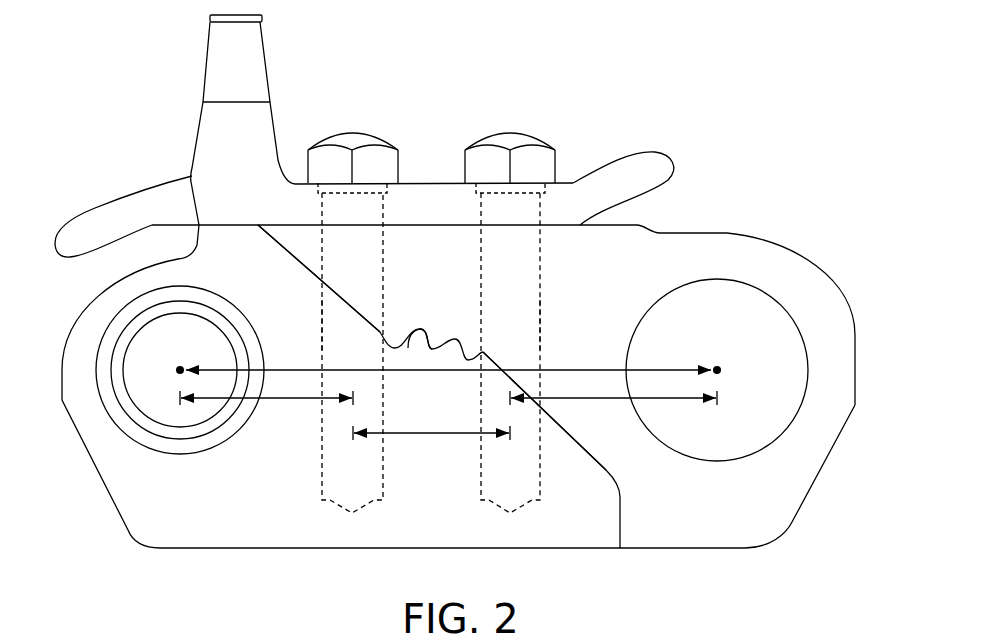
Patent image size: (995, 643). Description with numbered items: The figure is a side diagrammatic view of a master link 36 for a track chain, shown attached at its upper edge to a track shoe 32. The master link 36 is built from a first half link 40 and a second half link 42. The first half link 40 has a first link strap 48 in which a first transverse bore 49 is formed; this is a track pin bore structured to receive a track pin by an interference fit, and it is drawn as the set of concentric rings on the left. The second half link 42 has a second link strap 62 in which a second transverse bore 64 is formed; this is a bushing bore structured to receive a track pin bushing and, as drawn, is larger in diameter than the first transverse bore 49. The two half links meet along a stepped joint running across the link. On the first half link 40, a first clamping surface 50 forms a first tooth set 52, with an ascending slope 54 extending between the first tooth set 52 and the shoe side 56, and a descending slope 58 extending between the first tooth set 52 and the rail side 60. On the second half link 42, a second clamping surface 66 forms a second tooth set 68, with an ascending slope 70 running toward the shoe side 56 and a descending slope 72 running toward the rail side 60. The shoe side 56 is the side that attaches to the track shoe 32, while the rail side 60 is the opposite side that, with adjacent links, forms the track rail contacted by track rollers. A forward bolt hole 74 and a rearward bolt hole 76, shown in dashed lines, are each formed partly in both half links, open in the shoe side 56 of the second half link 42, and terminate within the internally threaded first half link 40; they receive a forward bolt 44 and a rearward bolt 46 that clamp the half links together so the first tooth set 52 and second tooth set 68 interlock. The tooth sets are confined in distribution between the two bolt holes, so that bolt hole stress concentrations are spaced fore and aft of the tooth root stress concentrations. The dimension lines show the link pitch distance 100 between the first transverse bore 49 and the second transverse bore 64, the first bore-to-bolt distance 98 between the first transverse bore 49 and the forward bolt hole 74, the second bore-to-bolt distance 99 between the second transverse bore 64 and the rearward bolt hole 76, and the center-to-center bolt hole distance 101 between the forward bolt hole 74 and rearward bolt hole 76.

The track shoe 32 is at (268, 112).
The master link 36 is at (770, 142).
The first half link 40 is at (93, 296).
The second half link 42 is at (855, 405).
The forward bolt 44 is at (388, 160).
The rearward bolt 46 is at (548, 160).
The first link strap 48 is at (92, 398).
The first transverse bore 49 is at (204, 418).
The first clamping surface 50 is at (368, 318).
The first tooth set 52 is at (437, 320).
The ascending slope 54 is at (317, 271).
The shoe side 56 is at (258, 212).
The descending slope 58 is at (588, 452).
The rail side 60 is at (589, 563).
The second link strap 62 is at (855, 364).
The second transverse bore 64 is at (780, 424).
The second clamping surface 66 is at (558, 429).
The second tooth set 68 is at (410, 359).
The ascending slope 70 is at (291, 256).
The descending slope 72 is at (596, 466).
The forward bolt hole 74 is at (322, 326).
The rearward bolt hole 76 is at (541, 330).
The first bore-to-bolt distance 98 is at (275, 399).
The second bore-to-bolt distance 99 is at (590, 400).
The link pitch distance 100 is at (587, 367).
The center-to-center bolt hole distance 101 is at (426, 434).